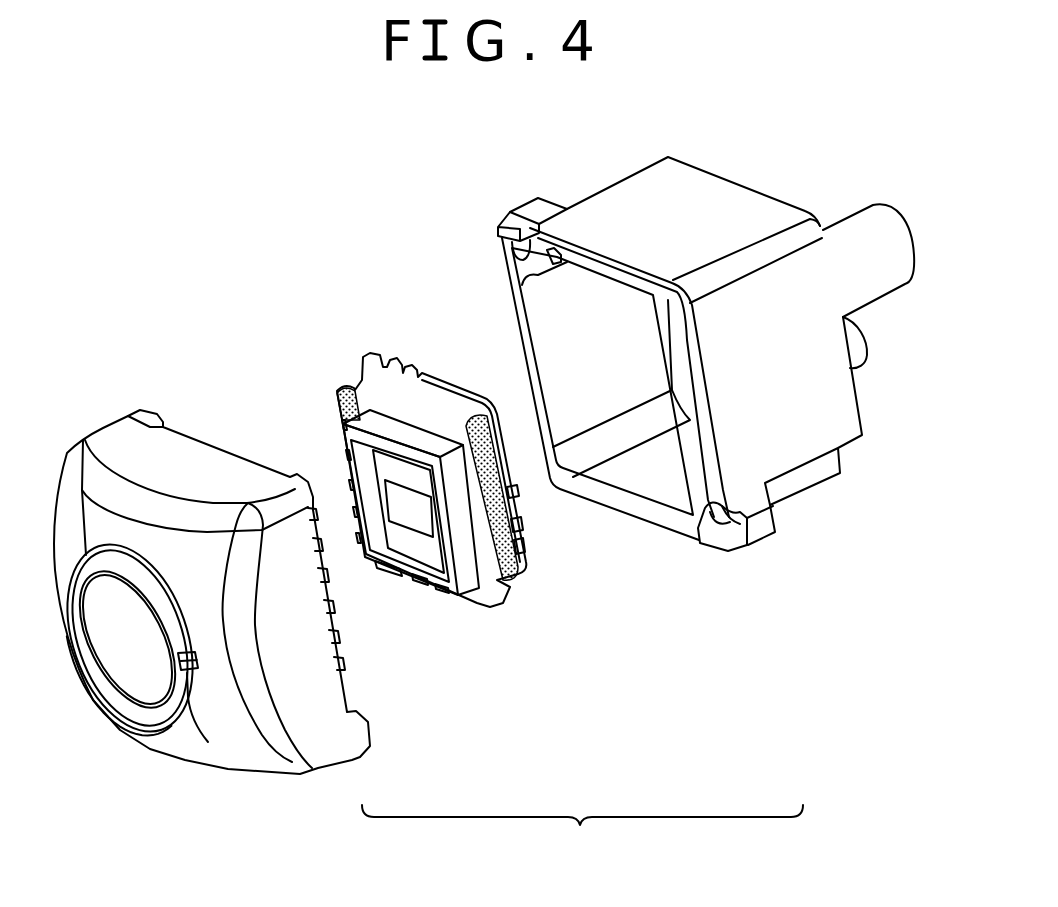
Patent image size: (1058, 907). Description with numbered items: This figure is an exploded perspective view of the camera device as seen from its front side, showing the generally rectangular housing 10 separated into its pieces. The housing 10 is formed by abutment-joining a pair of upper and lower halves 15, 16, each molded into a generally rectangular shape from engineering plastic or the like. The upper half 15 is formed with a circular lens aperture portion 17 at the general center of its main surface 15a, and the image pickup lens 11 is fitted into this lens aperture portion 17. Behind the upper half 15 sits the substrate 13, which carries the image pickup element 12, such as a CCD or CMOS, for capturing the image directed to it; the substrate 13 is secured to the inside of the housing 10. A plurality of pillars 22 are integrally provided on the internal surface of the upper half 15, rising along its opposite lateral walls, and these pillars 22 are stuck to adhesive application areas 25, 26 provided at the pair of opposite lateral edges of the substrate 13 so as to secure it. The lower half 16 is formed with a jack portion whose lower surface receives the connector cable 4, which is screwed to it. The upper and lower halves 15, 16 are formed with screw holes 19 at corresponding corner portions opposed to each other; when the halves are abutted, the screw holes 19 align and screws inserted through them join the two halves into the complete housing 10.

The connector cable 4 is at (848, 232).
The housing 10 is at (582, 835).
The image pickup lens 11 is at (107, 652).
The image pickup element 12 is at (400, 508).
The substrate 13 is at (487, 600).
The upper half 15 is at (337, 740).
The main surface 15a is at (165, 743).
The lower half 16 is at (758, 515).
The lens aperture portion 17 is at (188, 678).
The screw holes 19 is at (722, 533).
The pillars 22 is at (342, 664).
The adhesive application area 25 is at (505, 570).
The adhesive application area 26 is at (333, 395).